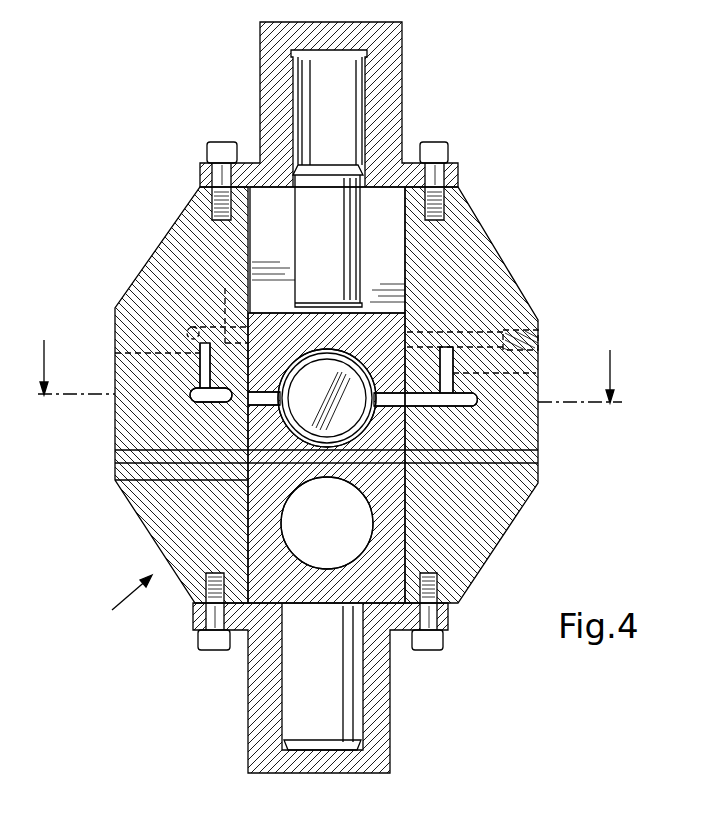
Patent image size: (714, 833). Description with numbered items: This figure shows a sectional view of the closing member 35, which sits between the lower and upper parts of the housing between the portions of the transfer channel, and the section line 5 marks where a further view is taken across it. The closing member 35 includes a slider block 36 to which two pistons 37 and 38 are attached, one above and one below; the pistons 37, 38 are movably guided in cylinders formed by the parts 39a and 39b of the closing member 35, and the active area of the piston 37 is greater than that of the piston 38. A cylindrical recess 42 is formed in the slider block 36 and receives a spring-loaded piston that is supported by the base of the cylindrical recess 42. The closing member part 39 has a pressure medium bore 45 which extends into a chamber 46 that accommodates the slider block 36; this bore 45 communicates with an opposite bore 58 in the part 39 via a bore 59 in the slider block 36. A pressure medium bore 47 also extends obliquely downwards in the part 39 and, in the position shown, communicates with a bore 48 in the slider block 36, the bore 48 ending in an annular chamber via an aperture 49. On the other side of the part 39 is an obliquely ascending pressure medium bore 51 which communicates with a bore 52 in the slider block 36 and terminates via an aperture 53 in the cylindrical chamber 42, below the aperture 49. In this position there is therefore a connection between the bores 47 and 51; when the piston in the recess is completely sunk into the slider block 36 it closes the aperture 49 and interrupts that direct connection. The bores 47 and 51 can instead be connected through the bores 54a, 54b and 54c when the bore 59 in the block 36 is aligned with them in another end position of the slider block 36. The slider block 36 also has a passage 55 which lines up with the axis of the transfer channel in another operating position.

The closing member 35 is at (121, 606).
The slider block 36 is at (280, 315).
The piston 37 is at (347, 724).
The piston 38 is at (333, 180).
The closing member part 39 is at (243, 213).
The closing member part 39a is at (263, 72).
The closing member part 39b is at (385, 677).
The cylindrical recess 42 is at (327, 398).
The pressure medium bore 45 is at (160, 453).
The chamber 46 is at (327, 250).
The pressure medium bore 47 is at (478, 405).
The bore 48 is at (396, 407).
The aperture 49 is at (378, 392).
The pressure medium bore 51 is at (200, 404).
The bore 52 is at (262, 404).
The aperture 53 is at (268, 405).
The bore 54a is at (225, 343).
The bore 54b is at (120, 353).
The bore 54c is at (530, 373).
The passage 55 is at (327, 523).
The bore 58 is at (538, 465).
The bore 59 is at (266, 458).
The section line 5 is at (328, 378).